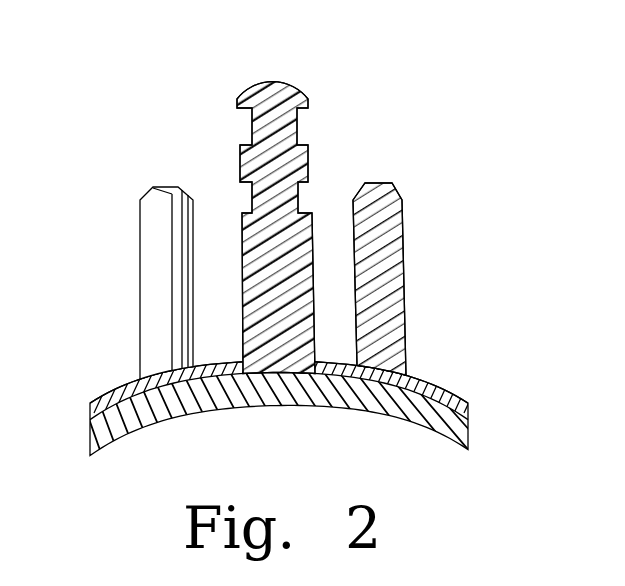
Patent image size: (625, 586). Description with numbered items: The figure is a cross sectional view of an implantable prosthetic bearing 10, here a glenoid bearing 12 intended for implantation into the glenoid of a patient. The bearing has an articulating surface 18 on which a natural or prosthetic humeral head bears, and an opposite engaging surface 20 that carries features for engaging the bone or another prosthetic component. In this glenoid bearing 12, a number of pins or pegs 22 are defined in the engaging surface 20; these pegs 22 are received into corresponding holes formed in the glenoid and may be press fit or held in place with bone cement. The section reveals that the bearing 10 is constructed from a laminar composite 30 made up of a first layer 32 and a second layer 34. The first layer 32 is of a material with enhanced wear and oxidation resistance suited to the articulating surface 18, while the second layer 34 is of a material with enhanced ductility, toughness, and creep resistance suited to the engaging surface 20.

The implantable prosthetic bearing 10 is at (405, 73).
The glenoid bearing 12 is at (408, 152).
The articulating surface 18 is at (293, 408).
The engaging surface 20 is at (400, 353).
The pegs 22 is at (258, 80).
The laminar composite 30 is at (457, 384).
The first layer 32 is at (133, 437).
The second layer 34 is at (102, 407).